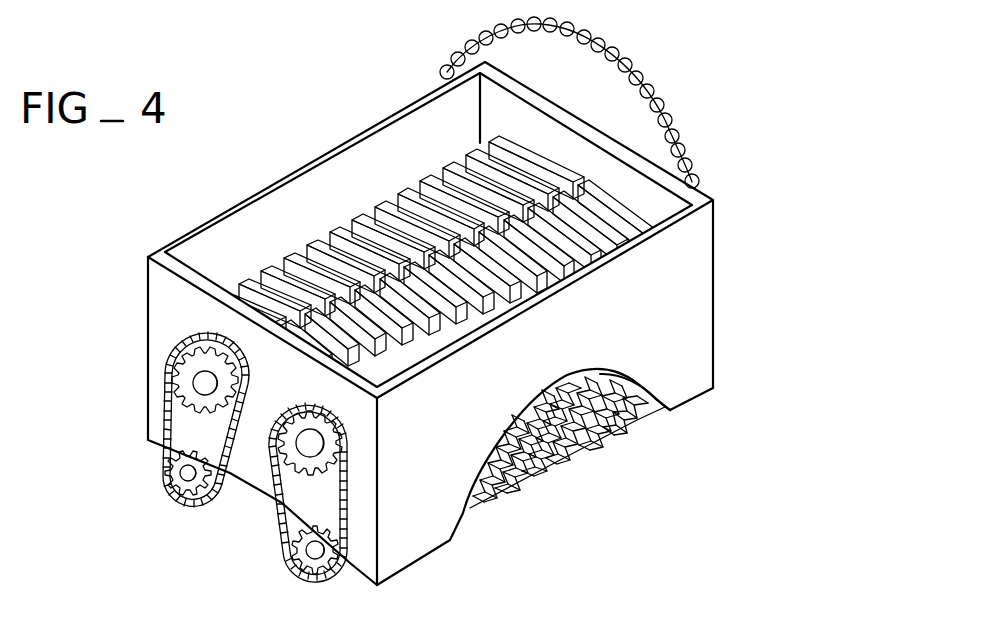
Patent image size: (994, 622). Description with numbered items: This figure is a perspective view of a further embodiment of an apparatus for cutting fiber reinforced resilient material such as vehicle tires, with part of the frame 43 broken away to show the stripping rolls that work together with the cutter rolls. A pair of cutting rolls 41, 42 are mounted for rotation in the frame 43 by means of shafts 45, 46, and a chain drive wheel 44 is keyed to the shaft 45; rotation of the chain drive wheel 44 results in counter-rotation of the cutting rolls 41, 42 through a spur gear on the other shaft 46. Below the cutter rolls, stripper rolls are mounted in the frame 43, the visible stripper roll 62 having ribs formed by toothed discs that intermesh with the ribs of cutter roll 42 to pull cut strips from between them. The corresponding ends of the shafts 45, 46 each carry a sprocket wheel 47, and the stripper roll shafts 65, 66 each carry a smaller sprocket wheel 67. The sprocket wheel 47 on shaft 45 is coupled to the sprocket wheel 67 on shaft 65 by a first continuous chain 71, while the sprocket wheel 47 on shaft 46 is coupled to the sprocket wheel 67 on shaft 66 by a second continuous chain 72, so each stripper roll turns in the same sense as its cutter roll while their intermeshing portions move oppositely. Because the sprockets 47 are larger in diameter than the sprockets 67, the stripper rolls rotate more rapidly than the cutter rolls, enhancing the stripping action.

The cutting roll 41 is at (303, 253).
The cutting roll 42 is at (585, 277).
The frame 43 is at (690, 380).
The chain drive wheel 44 is at (595, 78).
The shaft 45 is at (203, 387).
The shaft 46 is at (313, 443).
The sprocket wheel 47 is at (188, 360).
The stripper roll 62 is at (513, 467).
The shaft 65 is at (187, 482).
The shaft 66 is at (305, 548).
The sprocket wheel 67 is at (177, 468).
The first continuous chain 71 is at (165, 452).
The second continuous chain 72 is at (350, 497).